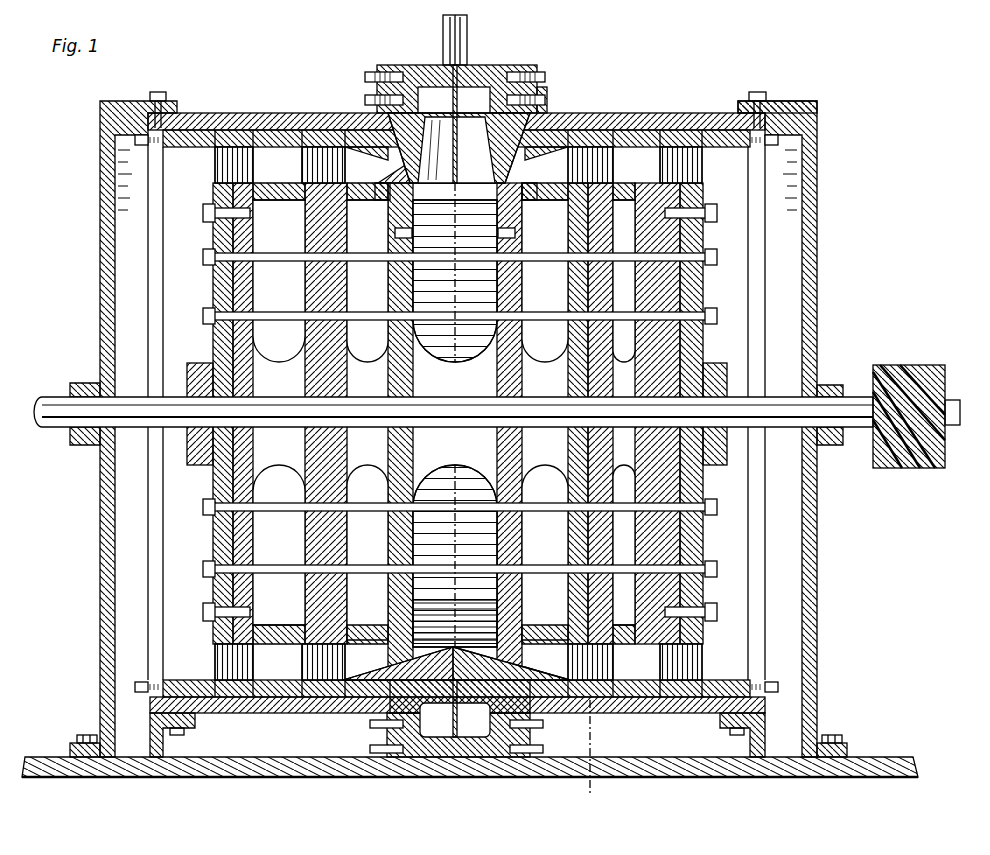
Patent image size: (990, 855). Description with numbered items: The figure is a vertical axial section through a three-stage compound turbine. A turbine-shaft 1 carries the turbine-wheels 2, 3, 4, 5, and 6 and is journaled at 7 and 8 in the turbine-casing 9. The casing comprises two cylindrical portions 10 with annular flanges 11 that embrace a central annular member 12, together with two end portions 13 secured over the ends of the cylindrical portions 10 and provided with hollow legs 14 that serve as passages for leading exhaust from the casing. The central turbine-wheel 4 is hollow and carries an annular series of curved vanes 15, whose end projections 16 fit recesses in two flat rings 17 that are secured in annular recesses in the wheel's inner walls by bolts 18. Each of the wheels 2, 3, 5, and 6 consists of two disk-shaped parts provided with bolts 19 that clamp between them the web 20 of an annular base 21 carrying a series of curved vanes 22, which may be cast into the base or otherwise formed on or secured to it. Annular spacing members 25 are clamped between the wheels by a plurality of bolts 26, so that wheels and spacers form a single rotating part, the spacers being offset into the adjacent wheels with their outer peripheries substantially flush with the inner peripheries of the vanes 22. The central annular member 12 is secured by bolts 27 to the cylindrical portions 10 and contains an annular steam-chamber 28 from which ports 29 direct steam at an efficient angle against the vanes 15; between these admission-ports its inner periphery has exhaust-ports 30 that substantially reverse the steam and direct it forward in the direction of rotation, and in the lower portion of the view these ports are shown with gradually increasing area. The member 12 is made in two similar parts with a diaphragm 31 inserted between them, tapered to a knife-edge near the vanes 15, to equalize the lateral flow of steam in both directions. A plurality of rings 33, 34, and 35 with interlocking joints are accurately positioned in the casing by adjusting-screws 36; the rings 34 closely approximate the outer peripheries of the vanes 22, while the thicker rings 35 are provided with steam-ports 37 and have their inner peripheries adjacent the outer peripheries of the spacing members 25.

The turbine-shaft 1 is at (54, 397).
The turbine-wheel 2 is at (213, 290).
The turbine-wheel 3 is at (305, 280).
The central turbine-wheel 4 is at (388, 291).
The turbine-wheel 5 is at (568, 291).
The turbine-wheel 6 is at (660, 291).
The journal 7 is at (82, 383).
The journal 8 is at (826, 385).
The turbine-casing 9 is at (716, 112).
The cylindrical portion 10 is at (258, 126).
The annular flange 11 is at (548, 98).
The central annular member 12 is at (478, 108).
The end portion 13 is at (100, 230).
The hollow leg 14 is at (125, 720).
The curved vanes 15 is at (440, 195).
The end projections 16 is at (392, 201).
The flat rings 17 is at (390, 183).
The bolts 18 is at (395, 234).
The bolts 19 is at (262, 216).
The web 20 is at (205, 213).
The annular base 21 is at (222, 190).
The curved vanes 22 is at (234, 145).
The annular spacing members 25 is at (460, 434).
The bolts 26 is at (205, 256).
The bolts 27 is at (372, 76).
The annular steam-chamber 28 is at (428, 100).
The ports 29 is at (508, 150).
The exhaust-ports 30 is at (424, 650).
The diaphragm 31 is at (460, 100).
The rings 33 is at (716, 147).
The rings 34 is at (562, 152).
The rings 35 is at (636, 732).
The adjusting-screws 36 is at (140, 147).
The steam-ports 37 is at (262, 628).